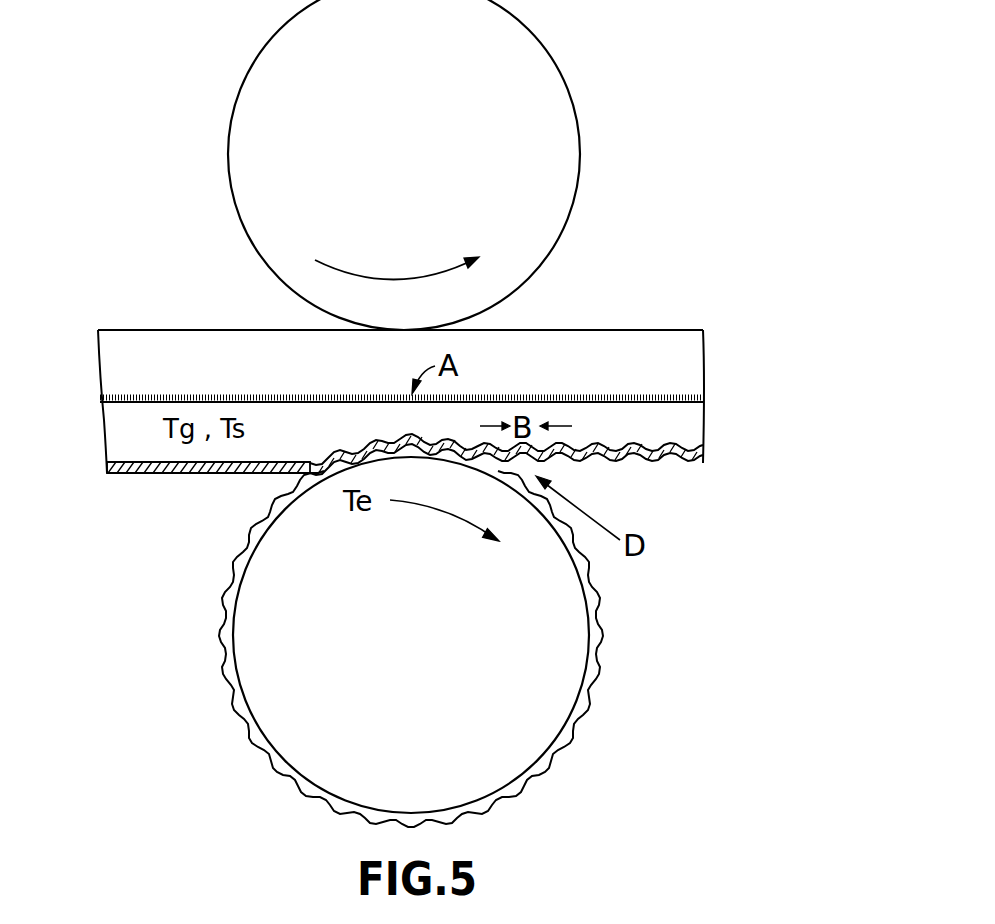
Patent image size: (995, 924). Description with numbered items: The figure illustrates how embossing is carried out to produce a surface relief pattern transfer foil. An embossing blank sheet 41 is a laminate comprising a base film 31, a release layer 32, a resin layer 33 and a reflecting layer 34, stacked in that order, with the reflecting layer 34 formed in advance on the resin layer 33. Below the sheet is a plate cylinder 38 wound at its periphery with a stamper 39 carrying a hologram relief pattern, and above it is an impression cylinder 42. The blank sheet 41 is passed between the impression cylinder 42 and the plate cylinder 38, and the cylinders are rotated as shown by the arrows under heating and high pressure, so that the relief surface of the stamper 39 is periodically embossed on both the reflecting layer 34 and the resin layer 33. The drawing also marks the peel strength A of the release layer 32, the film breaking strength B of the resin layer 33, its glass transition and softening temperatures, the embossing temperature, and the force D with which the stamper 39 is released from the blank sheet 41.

The base film 31 is at (703, 352).
The release layer 32 is at (703, 393).
The resin layer 33 is at (703, 424).
The reflecting layer 34 is at (703, 453).
The plate cylinder 38 is at (532, 714).
The stamper 39 is at (596, 622).
The embossing blank sheet 41 is at (100, 484).
The impression cylinder 42 is at (568, 92).